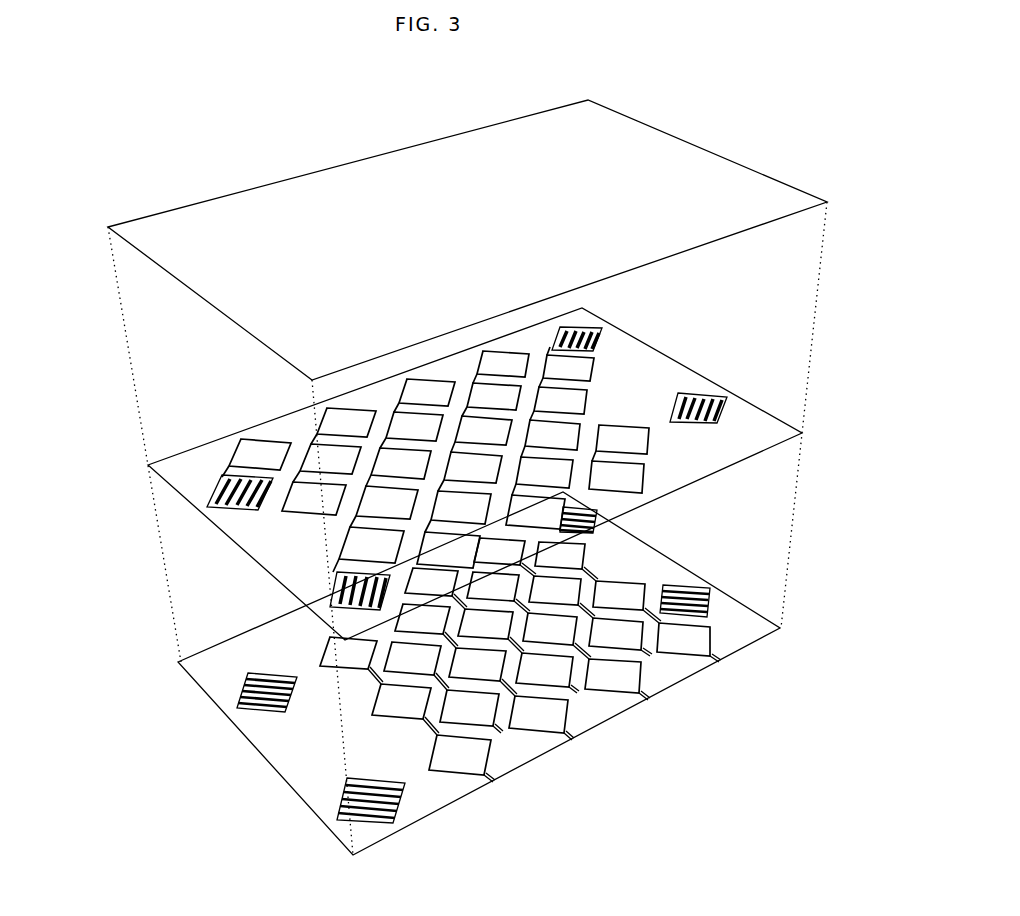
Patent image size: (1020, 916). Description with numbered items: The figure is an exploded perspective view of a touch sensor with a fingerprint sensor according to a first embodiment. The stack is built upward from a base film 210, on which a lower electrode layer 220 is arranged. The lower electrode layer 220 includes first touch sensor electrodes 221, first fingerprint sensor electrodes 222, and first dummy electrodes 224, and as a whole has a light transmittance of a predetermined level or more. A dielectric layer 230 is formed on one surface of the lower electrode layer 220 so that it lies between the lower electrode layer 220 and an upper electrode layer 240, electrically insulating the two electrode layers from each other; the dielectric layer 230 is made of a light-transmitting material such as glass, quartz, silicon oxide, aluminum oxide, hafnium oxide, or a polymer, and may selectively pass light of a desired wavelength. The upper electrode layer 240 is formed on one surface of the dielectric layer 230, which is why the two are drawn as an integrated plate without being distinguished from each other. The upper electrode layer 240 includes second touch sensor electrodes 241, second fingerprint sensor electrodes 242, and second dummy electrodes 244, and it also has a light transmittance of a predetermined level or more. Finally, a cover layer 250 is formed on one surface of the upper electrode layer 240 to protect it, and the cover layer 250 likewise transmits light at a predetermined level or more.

The base film 210 is at (780, 616).
The lower electrode layer 220 is at (481, 698).
The first touch sensor electrodes 221 is at (552, 728).
The first fingerprint sensor electrodes 222 is at (403, 800).
The first dummy electrodes 224 is at (570, 682).
The dielectric layer 230 is at (763, 418).
The upper electrode layer 240 is at (379, 513).
The second touch sensor electrodes 241 is at (298, 504).
The second fingerprint sensor electrodes 242 is at (230, 505).
The second dummy electrodes 244 is at (345, 530).
The cover layer 250 is at (770, 184).